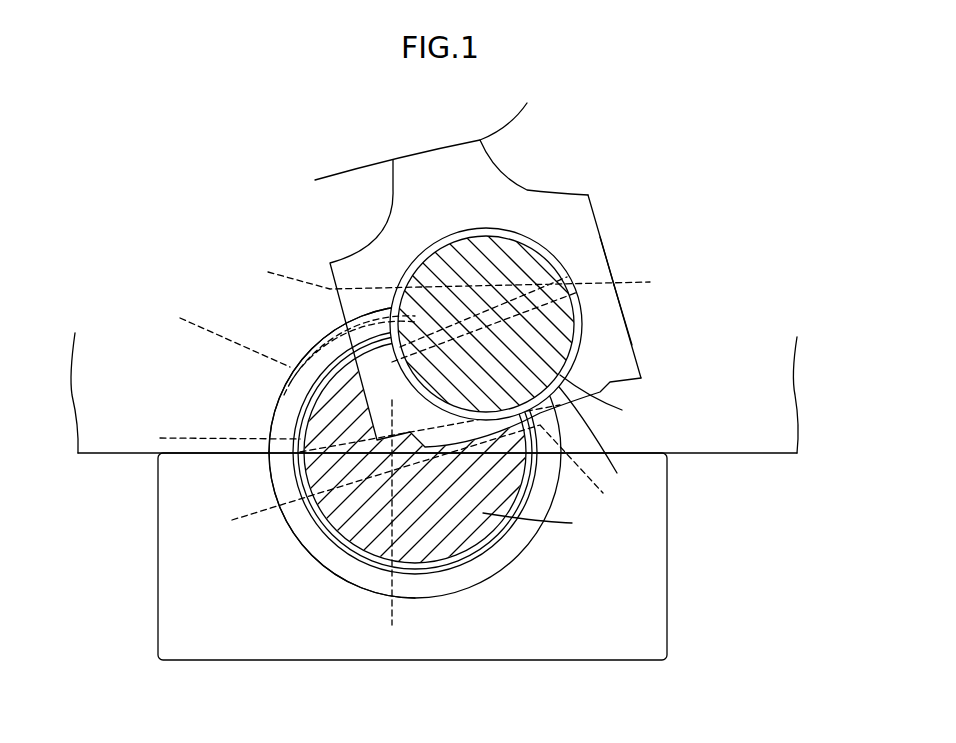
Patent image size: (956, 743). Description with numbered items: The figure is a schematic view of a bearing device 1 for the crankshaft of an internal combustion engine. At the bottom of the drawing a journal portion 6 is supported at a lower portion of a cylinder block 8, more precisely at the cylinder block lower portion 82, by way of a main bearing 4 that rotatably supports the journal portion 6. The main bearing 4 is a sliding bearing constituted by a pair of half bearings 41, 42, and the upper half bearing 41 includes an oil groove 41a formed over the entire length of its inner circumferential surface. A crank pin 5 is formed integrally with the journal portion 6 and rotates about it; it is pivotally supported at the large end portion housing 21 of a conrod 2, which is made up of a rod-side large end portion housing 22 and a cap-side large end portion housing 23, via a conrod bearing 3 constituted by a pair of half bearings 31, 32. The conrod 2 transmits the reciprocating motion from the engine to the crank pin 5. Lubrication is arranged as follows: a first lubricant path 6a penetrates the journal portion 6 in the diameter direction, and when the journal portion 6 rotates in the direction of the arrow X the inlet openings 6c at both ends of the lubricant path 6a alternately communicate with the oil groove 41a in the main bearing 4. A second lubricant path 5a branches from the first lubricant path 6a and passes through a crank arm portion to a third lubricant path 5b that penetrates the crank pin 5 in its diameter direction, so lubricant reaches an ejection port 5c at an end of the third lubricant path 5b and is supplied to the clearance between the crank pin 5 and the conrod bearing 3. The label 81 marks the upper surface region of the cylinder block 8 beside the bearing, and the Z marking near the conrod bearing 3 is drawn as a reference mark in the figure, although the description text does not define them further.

The bearing device 1 is at (152, 202).
The conrod 2 is at (390, 188).
The conrod bearing 3 is at (598, 345).
The half bearing 31 is at (447, 240).
The half bearing 32 is at (597, 436).
The large end portion housing 21 is at (614, 208).
The rod-side large end portion housing 22 is at (610, 250).
The cap-side large end portion housing 23 is at (632, 317).
The main bearing 4 is at (262, 470).
The half bearing 41 is at (276, 400).
The oil groove 41a is at (208, 437).
The half bearing 42 is at (278, 506).
The crank pin 5 is at (507, 257).
The second lubricant path 5a is at (281, 348).
The third lubricant path 5b is at (444, 309).
The ejection port 5c is at (600, 283).
The journal portion 6 is at (345, 530).
The lubricant path 6a is at (391, 523).
The inlet opening 6c is at (412, 471).
The cylinder block 8 is at (768, 488).
The housing upper surface 81 is at (716, 455).
The cylinder block lower portion 82 is at (667, 600).
The arrow X is at (536, 522).
The Z direction Z is at (599, 398).